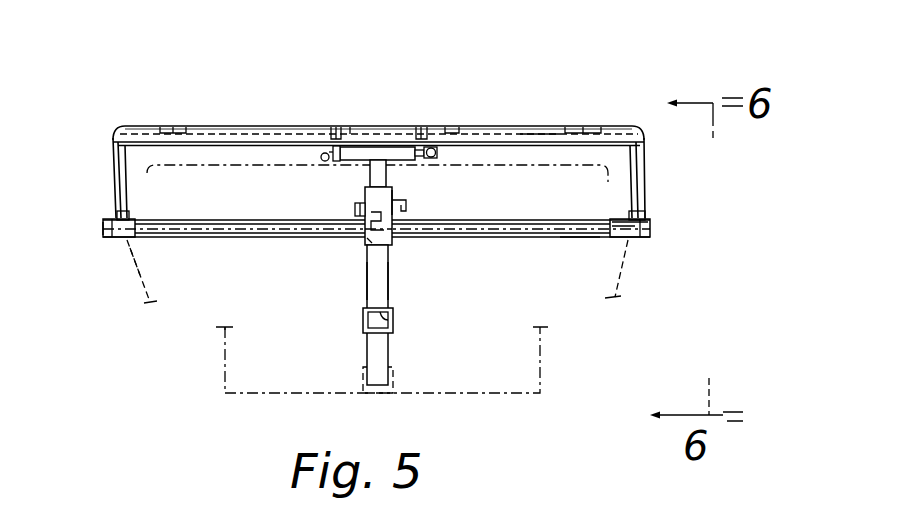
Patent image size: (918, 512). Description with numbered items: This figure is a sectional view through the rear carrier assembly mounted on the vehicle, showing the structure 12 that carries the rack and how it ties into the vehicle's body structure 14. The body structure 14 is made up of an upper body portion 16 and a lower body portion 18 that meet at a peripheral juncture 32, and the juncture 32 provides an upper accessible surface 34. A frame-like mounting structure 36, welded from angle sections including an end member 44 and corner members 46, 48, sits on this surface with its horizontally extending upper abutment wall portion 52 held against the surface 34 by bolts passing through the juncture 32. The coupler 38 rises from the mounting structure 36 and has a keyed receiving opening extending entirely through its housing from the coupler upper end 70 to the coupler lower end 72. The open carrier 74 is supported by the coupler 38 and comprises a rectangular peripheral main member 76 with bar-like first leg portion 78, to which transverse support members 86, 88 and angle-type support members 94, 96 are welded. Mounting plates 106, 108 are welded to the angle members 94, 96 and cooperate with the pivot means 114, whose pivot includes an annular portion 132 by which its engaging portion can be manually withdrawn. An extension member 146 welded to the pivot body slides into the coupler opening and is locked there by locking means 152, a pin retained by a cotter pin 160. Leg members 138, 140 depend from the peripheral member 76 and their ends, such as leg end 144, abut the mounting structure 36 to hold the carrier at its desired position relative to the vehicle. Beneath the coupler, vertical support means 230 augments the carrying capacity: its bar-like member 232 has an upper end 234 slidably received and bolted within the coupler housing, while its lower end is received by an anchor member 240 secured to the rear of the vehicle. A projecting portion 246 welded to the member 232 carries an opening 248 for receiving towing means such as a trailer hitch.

The structure 12 is at (310, 264).
The body structure 14 is at (134, 294).
The upper body portion 16 is at (391, 124).
The lower body portion 18 is at (128, 250).
The juncture 32 is at (93, 229).
The accessible surface 34 is at (238, 221).
The mounting structure 36 is at (532, 249).
The coupler 38 is at (406, 188).
The end member 44 is at (578, 239).
The corner member 46 is at (110, 235).
The corner member 48 is at (645, 240).
The upper abutment wall portion 52 is at (127, 219).
The coupler upper end 70 is at (372, 176).
The coupler lower end 72 is at (393, 247).
The carrier 74 is at (580, 103).
The peripheral main member 76 is at (537, 124).
The first leg portion 78 is at (249, 127).
The transverse support member 86 is at (189, 131).
The transverse support member 88 is at (603, 127).
The transverse angle type support member 94 is at (302, 127).
The transverse angle type support member 96 is at (455, 127).
The mounting plate 106 is at (350, 127).
The mounting plate 108 is at (411, 127).
The pivot means 114 is at (376, 140).
The annular portion 132 is at (437, 155).
The leg member 138 is at (115, 153).
The leg member 140 is at (644, 160).
The leg end 144 is at (650, 228).
The extension member 146 is at (388, 168).
The locking means 152 is at (419, 205).
The cotter pin 160 is at (353, 213).
The vertical support means 230 is at (386, 338).
The bar-like member 232 is at (390, 285).
The upper end 234 is at (352, 240).
The anchor member 240 is at (397, 384).
The projecting portion 246 is at (377, 334).
The opening 248 is at (393, 320).